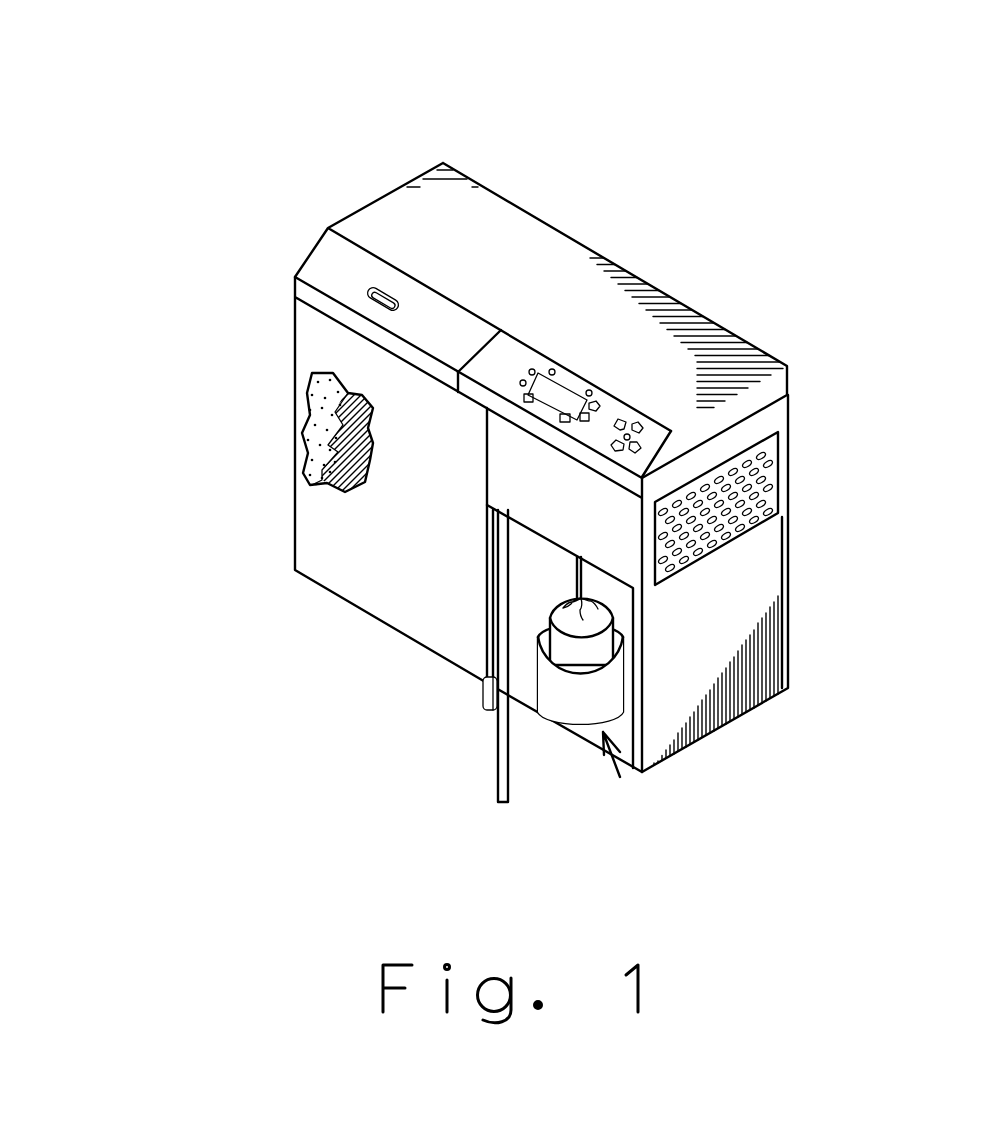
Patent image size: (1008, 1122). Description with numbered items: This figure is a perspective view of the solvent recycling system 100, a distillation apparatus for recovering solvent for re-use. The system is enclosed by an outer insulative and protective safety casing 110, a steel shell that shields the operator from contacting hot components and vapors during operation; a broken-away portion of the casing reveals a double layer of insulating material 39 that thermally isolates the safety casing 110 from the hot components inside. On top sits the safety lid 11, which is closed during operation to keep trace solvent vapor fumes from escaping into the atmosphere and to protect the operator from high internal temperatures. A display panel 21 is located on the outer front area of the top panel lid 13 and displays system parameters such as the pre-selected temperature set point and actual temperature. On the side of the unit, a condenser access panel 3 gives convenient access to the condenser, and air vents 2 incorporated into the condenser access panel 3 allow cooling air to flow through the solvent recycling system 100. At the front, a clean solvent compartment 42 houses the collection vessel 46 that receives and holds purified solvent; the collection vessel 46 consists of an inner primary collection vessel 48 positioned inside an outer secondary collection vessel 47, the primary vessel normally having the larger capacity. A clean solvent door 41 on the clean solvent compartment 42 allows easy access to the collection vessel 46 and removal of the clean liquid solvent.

The solvent recycling system 100 is at (270, 133).
The safety lid 11 is at (493, 215).
The top panel lid 13 is at (748, 342).
The display panel 21 is at (520, 358).
The safety casing 110 is at (360, 538).
The insulating material 39 is at (312, 390).
The condenser access panel 3 is at (750, 622).
The air vents 2 is at (763, 458).
The clean solvent compartment 42 is at (523, 537).
The clean solvent door 41 is at (497, 730).
The secondary collection vessel 47 is at (632, 657).
The primary collection vessel 48 is at (616, 626).
The collection vessel 46 is at (620, 777).